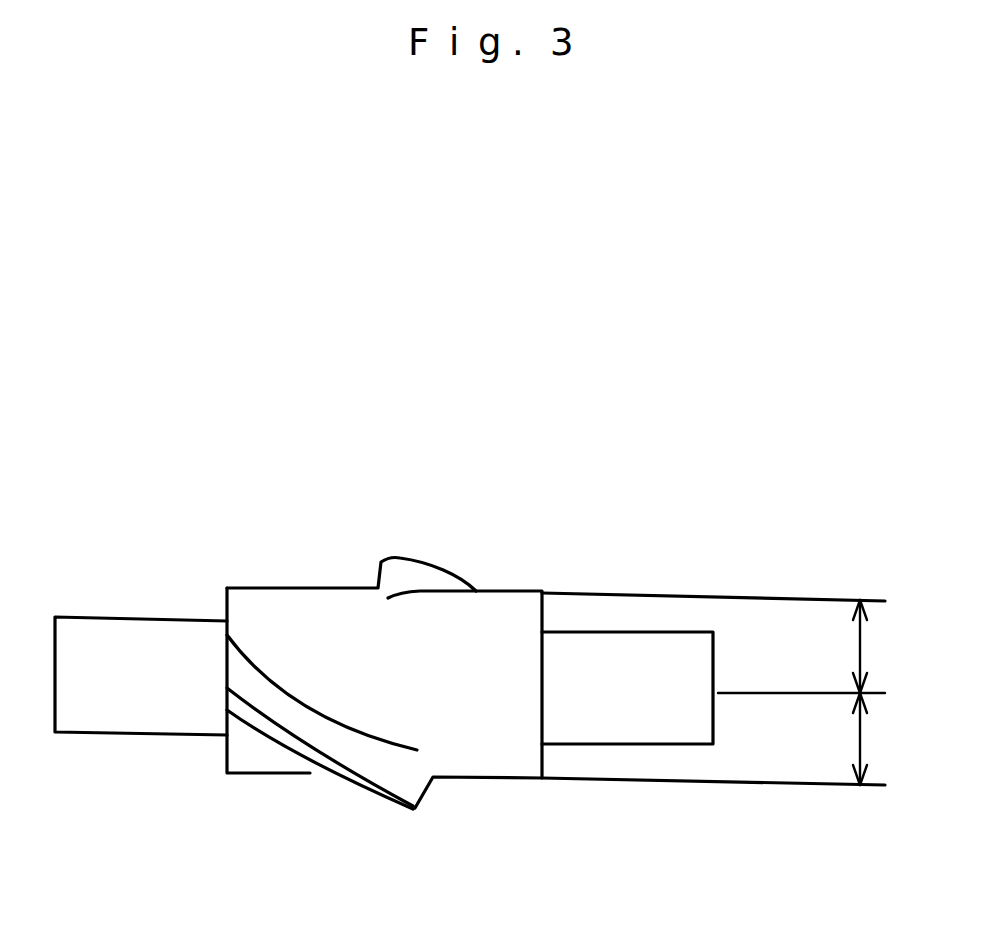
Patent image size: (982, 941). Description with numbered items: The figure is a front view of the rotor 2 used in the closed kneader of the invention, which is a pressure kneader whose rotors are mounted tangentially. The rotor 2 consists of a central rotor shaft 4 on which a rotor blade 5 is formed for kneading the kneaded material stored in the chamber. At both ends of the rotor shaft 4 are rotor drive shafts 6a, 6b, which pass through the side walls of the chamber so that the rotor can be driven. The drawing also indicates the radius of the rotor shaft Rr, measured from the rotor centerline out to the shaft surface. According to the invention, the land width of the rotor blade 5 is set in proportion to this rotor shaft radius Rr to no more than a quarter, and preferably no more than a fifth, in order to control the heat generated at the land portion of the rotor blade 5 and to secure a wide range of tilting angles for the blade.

The rotor 2 is at (290, 583).
The rotor shaft 4 is at (452, 703).
The rotor blade 5 is at (325, 745).
The rotor drive shaft 6a is at (617, 713).
The rotor drive shaft 6b is at (137, 690).
The radius of the rotor shaft Rr is at (857, 645).